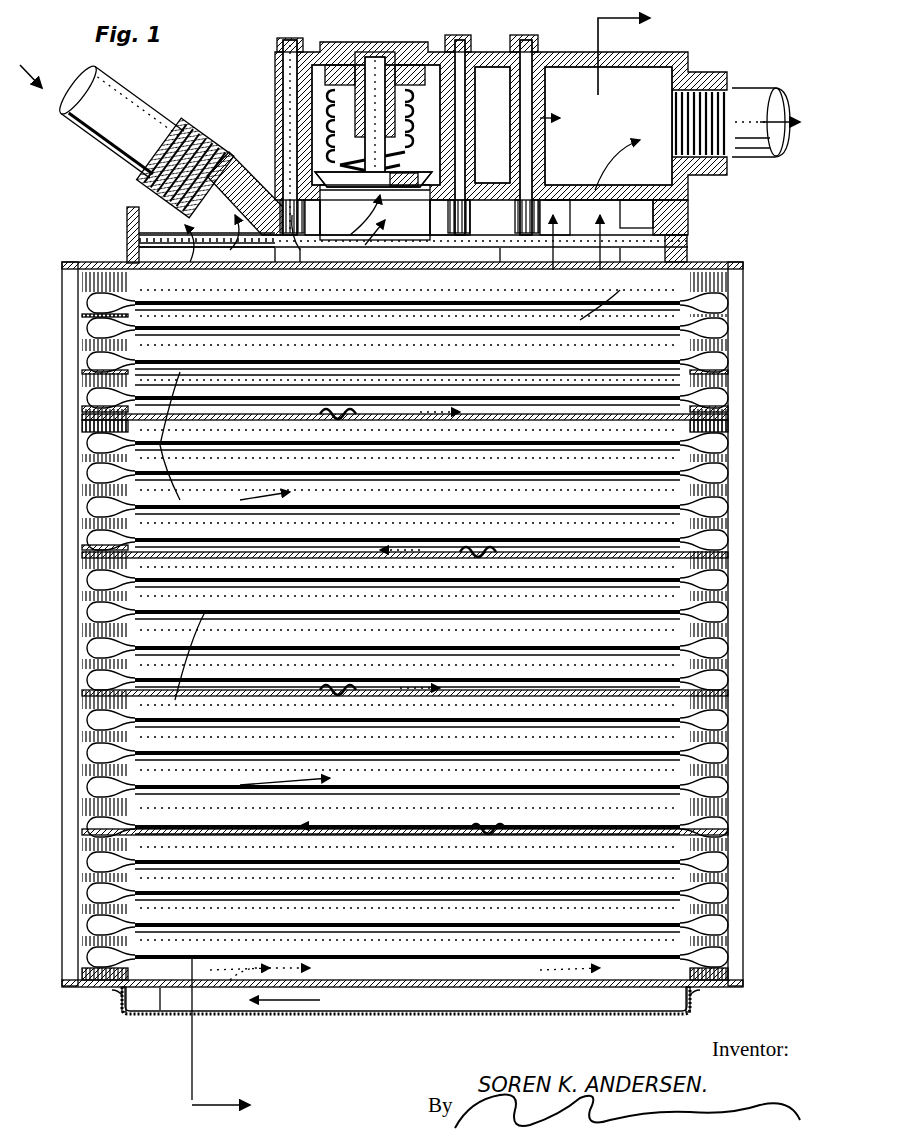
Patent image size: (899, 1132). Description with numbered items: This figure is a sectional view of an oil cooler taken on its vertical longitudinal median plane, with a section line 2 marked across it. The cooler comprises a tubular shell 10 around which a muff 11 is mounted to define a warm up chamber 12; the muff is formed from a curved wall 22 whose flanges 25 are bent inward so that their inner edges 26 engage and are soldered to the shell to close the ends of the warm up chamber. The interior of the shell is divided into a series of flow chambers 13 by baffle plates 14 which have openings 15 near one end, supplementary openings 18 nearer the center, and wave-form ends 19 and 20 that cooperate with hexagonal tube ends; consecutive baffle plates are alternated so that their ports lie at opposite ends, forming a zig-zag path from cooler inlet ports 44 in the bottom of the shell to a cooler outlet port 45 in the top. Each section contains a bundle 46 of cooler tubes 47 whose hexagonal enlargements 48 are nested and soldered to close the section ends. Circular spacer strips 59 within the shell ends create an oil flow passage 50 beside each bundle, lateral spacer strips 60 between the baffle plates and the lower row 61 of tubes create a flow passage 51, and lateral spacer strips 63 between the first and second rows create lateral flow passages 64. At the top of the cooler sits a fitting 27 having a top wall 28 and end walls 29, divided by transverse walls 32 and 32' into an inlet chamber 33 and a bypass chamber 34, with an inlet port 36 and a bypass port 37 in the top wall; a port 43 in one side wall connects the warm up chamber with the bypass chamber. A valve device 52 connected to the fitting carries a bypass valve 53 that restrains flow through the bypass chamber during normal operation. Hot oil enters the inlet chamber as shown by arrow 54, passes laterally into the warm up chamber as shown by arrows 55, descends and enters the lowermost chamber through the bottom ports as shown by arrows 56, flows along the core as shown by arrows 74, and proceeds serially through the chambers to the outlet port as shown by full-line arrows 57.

The section line 2- 2 is at (431, 562).
The shell 10 is at (78, 262).
The muff 11 is at (352, 1040).
The warm up chamber 12 is at (498, 988).
The flow chambers 13 is at (407, 634).
The baffle plates 14 is at (532, 430).
The openings 15 is at (407, 659).
The supplementary openings 18 is at (340, 418).
The end of baffle plate 19 is at (95, 428).
The end of baffle plate 20 is at (700, 428).
The wall 22 is at (287, 1016).
The flanges 25 is at (125, 1012).
The inner edges 26 is at (122, 992).
The fitting 27 is at (690, 207).
The top wall 28 is at (520, 180).
The end walls 29 is at (127, 248).
The transverse wall 32 is at (308, 251).
The transverse wall 32' is at (560, 251).
The inlet chamber 33 is at (225, 245).
The bypass chamber 34 is at (403, 250).
The inlet port 36 is at (225, 200).
The bypass port 37 is at (375, 240).
The port 43 is at (470, 250).
The cooler inlet ports 44 is at (162, 992).
The cooler outlet port 45 is at (690, 230).
The bundle of cooler tubes 46 is at (130, 325).
The cooler tubes 47 is at (297, 689).
The hexagonal enlargements 48 is at (92, 540).
The oil flow passage 50 is at (640, 295).
The flow passage 51 is at (540, 410).
The valve device 52 is at (692, 54).
The bypass valve 53 is at (328, 168).
The arrow 54 is at (195, 185).
The arrows 55 is at (235, 250).
The arrows 56 is at (205, 990).
The full-line arrows 57 is at (387, 619).
The circular spacer strips 59 is at (84, 972).
The lateral spacer strips 60 is at (90, 405).
The lower row of tubes 61 is at (90, 548).
The lateral spacer strips 63 is at (90, 362).
The lateral flow passages 64 is at (415, 370).
The arrows 74 is at (335, 1038).